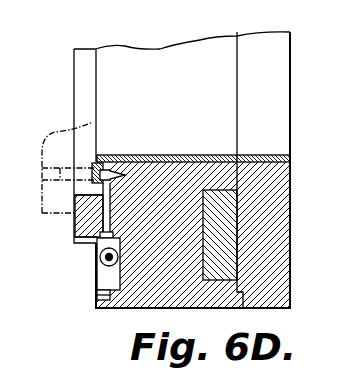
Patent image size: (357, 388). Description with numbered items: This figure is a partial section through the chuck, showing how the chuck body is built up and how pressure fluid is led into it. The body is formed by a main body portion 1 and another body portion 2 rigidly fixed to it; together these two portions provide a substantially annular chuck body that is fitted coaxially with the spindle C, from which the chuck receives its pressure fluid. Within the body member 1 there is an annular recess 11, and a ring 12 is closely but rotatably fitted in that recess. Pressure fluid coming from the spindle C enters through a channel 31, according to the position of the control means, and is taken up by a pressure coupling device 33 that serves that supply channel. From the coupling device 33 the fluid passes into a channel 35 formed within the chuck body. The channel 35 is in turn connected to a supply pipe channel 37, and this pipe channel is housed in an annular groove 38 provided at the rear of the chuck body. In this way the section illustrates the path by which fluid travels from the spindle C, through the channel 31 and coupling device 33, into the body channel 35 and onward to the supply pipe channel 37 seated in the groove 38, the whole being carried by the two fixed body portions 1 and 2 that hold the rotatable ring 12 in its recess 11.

The main body portion 1 is at (180, 72).
The body portion 2 is at (255, 58).
The annular recess 11 is at (203, 207).
The ring 12 is at (228, 220).
The channel 31 is at (46, 175).
The pressure coupling device 33 is at (98, 165).
The channel 35 is at (135, 182).
The supply pipe channel 37 is at (98, 245).
The annular groove 38 is at (97, 277).
The spindle C is at (64, 150).